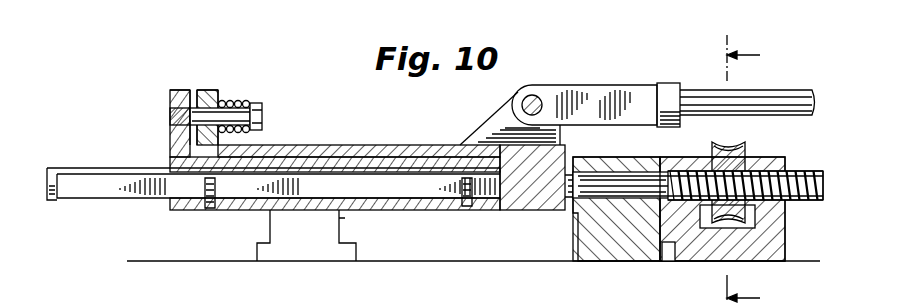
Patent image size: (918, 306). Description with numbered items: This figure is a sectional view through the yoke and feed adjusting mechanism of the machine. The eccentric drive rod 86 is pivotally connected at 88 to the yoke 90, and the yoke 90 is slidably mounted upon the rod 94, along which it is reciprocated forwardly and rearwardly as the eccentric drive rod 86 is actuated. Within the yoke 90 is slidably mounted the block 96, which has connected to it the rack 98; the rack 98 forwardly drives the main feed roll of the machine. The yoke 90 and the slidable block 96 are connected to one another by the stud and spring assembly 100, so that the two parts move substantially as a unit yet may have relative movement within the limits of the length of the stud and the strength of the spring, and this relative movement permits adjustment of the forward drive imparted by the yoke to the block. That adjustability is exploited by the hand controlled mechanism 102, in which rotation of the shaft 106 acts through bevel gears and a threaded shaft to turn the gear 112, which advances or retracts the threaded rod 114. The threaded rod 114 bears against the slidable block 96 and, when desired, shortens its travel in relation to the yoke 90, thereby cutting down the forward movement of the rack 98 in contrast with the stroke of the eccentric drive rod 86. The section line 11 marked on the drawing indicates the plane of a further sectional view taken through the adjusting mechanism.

The section line 11- 11 is at (745, 163).
The eccentric drive rod 86 is at (800, 97).
The pivot connection 88 is at (529, 97).
The yoke 90 is at (406, 145).
The rod 94 is at (100, 170).
The block 96 is at (522, 198).
The rack 98 is at (93, 193).
The stud and spring assembly 100 is at (220, 98).
The hand controlled mechanism 102 is at (724, 141).
The shaft 106 is at (283, 258).
The gear 112 is at (714, 155).
The threaded rod 114 is at (787, 193).